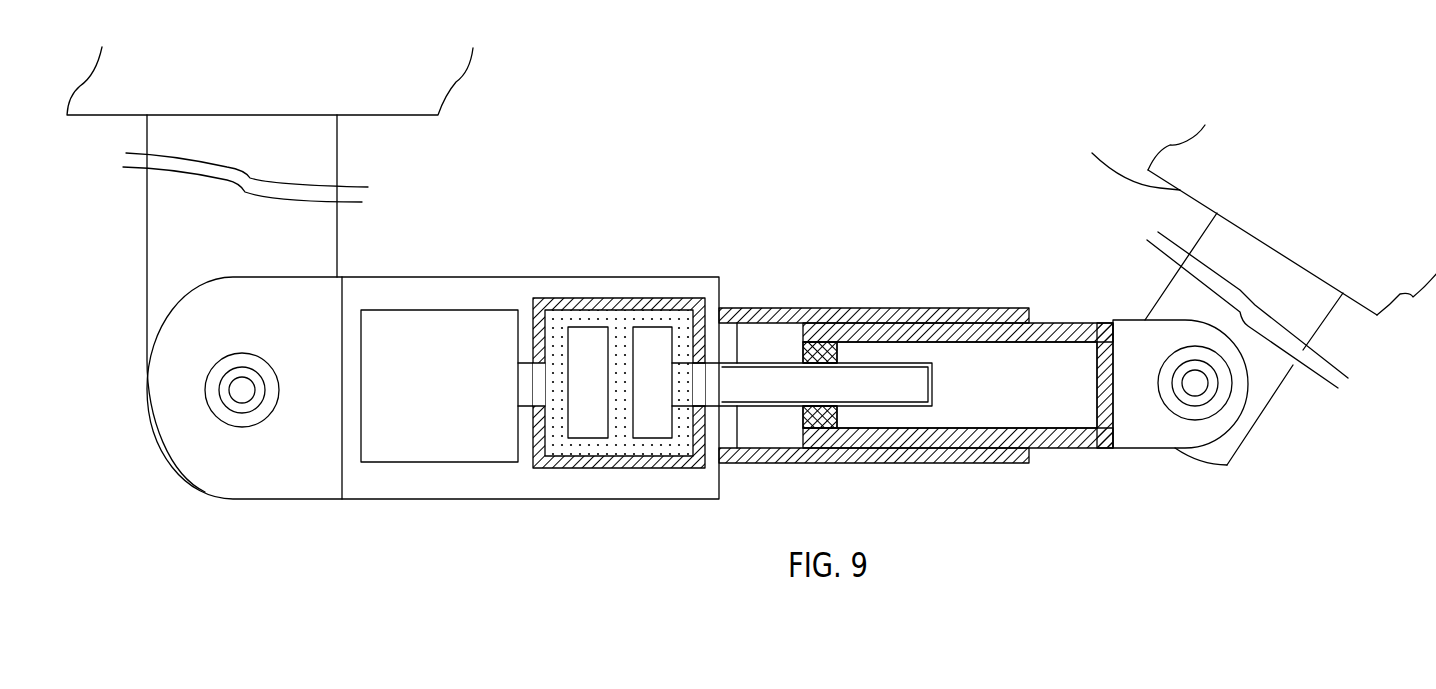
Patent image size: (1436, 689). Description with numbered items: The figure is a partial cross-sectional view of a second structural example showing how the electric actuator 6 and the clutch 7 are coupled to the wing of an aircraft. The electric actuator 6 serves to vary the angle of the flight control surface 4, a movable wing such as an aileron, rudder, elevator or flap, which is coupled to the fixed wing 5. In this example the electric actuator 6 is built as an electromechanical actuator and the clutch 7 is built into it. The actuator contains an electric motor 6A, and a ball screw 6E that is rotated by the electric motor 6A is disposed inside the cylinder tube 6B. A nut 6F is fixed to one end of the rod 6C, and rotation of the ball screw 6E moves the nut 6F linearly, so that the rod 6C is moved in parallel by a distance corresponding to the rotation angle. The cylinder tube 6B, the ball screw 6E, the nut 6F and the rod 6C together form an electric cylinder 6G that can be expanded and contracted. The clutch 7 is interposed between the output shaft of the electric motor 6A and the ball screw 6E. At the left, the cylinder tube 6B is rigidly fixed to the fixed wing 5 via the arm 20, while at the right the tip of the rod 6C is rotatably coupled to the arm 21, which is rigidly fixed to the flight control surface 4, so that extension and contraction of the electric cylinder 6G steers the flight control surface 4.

The flight control surface 4 is at (1252, 291).
The fixed wing 5 is at (368, 120).
The electric actuator 6 is at (571, 259).
The electric motor 6A is at (452, 310).
The cylinder tube 6B is at (886, 308).
The rod 6C is at (1061, 341).
The ball screw 6E is at (736, 308).
The nut 6F is at (803, 347).
The electric cylinder 6G is at (892, 320).
The clutch 7 is at (618, 298).
The arm 20 is at (338, 233).
The arm 21 is at (1162, 285).